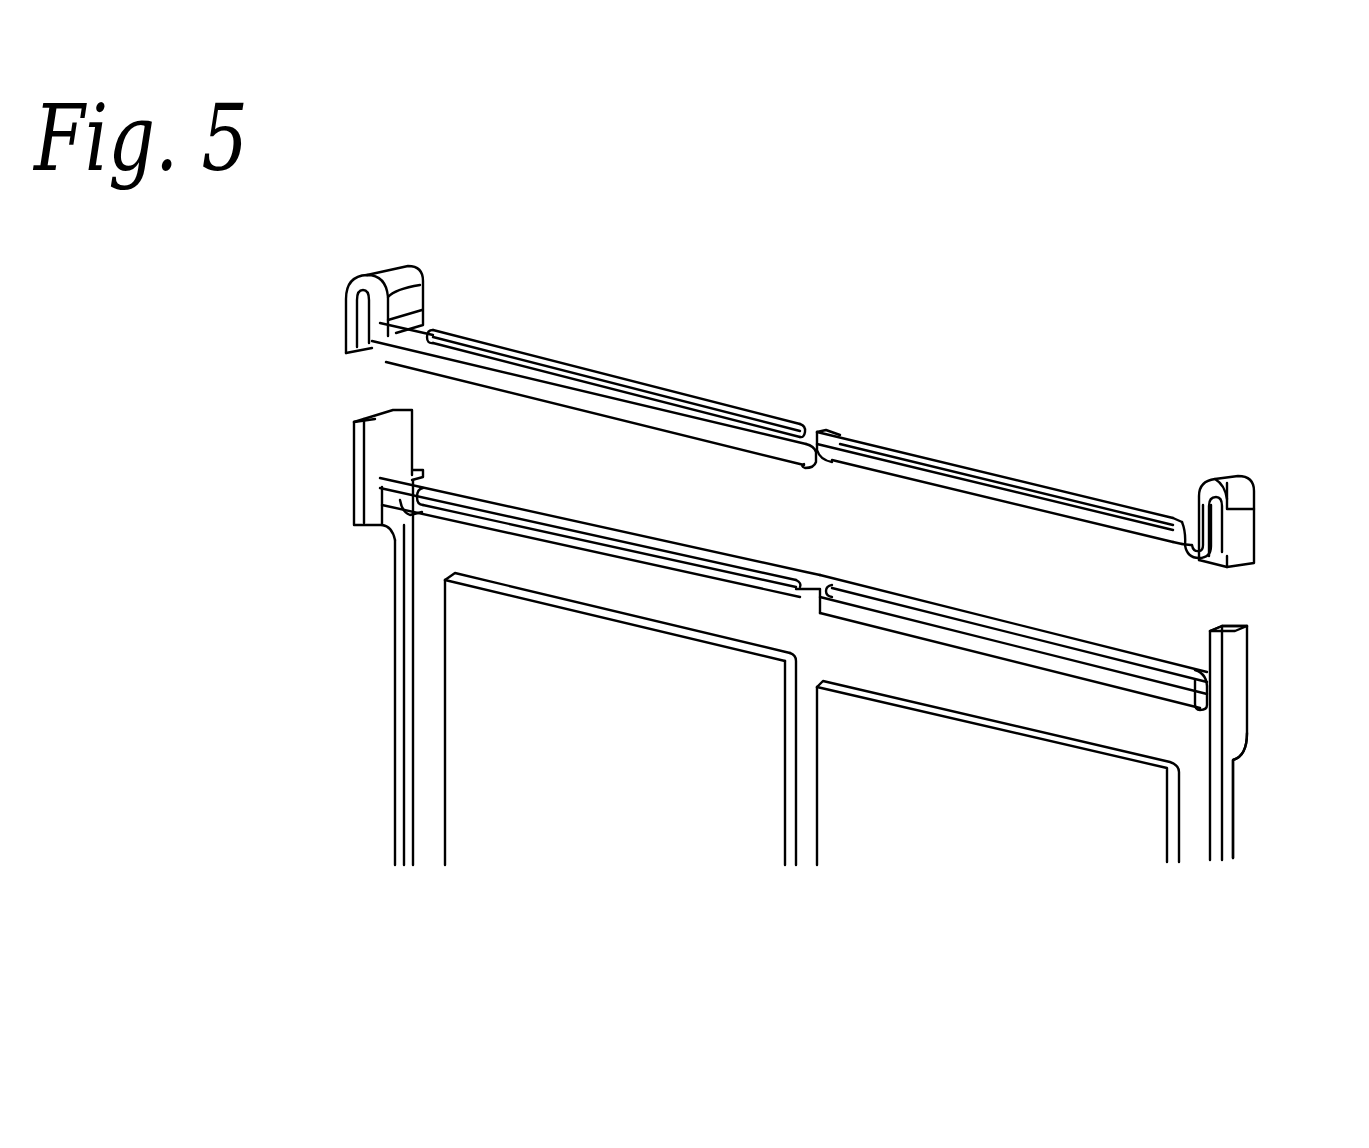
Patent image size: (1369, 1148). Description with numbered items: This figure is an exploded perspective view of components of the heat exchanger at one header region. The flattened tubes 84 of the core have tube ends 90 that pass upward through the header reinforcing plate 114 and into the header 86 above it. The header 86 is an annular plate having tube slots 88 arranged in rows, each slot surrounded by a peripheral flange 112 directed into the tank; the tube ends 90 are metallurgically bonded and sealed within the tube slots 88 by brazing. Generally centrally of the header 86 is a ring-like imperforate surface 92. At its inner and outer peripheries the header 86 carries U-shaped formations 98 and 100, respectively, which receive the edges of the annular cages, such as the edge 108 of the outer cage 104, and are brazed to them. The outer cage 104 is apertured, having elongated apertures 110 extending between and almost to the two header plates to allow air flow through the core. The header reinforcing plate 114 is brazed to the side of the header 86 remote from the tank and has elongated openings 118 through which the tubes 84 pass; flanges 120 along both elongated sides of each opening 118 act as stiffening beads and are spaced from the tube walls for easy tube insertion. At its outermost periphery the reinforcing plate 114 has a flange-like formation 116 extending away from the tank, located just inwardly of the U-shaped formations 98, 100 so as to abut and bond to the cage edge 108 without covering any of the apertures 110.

The tube 84 is at (990, 845).
The header 86 is at (1026, 483).
The tube slot 88 is at (719, 446).
The tube end 90 is at (717, 639).
The imperforate surface 92 is at (808, 434).
The U-shaped formation 98 is at (1250, 541).
The U-shaped formation 100 is at (348, 300).
The outer cage 104 is at (1228, 648).
The edge of cage 108 is at (1228, 628).
The elongated aperture 110 is at (1236, 798).
The peripheral flange 112 is at (728, 403).
The header reinforcing plate 114 is at (695, 586).
The flange-like formation 116 is at (402, 508).
The elongated opening 118 is at (563, 517).
The flange 120 is at (703, 573).